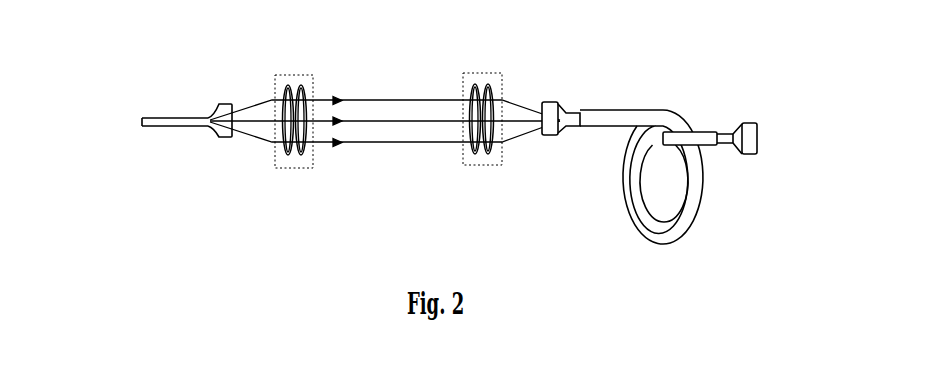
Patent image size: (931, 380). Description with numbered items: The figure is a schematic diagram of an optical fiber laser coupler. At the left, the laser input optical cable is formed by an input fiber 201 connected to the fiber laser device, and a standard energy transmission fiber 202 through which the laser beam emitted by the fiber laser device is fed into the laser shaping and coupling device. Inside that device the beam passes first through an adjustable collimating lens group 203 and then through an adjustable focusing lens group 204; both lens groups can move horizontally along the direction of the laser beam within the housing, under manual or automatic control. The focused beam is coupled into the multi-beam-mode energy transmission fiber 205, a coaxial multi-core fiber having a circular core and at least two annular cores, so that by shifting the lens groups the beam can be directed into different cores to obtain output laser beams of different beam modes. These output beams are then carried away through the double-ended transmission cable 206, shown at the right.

The input fiber 201 is at (173, 118).
The standard energy transmission fiber 202 is at (197, 127).
The adjustable collimating lens group 203 is at (293, 168).
The adjustable focusing lens group 204 is at (479, 165).
The multi-beam-mode energy transmission fiber 205 is at (572, 112).
The double-ended transmission cable 206 is at (598, 127).